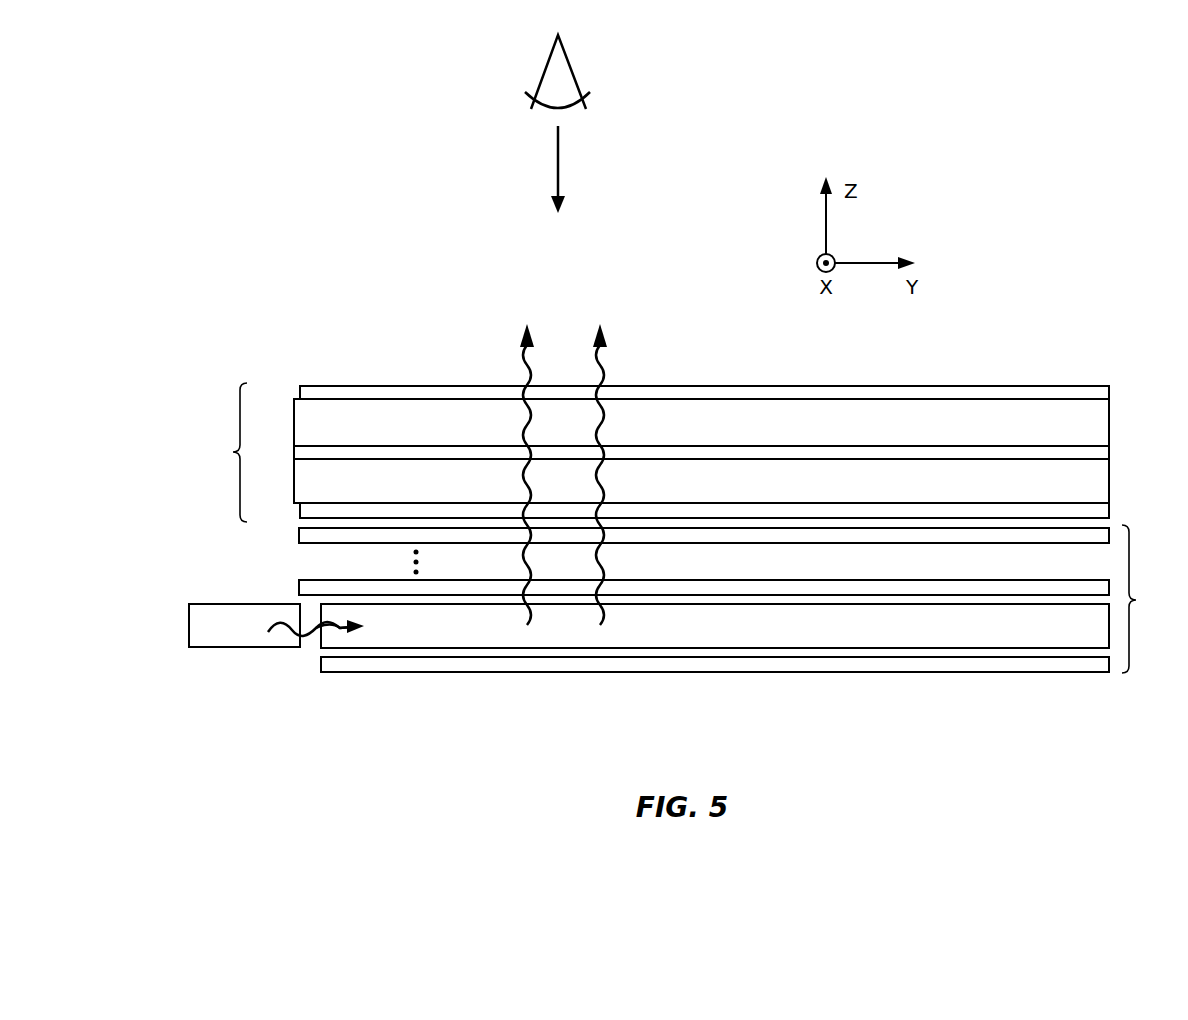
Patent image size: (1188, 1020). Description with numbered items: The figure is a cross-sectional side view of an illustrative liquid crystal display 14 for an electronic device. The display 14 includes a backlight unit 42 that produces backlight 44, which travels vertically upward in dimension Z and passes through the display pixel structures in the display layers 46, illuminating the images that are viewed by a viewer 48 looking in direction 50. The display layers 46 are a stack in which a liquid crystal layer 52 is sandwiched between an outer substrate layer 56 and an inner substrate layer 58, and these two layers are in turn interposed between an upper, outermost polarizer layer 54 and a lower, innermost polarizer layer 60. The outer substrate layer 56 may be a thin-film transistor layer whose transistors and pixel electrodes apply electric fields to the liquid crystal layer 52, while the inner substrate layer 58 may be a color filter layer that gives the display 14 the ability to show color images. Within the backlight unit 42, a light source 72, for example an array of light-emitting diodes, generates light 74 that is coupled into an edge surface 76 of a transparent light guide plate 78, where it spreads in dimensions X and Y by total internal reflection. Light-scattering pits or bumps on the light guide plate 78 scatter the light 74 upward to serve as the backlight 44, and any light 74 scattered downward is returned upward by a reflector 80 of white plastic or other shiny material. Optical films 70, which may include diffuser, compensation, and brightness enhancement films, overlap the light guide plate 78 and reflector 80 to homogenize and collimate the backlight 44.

The display 14 is at (1088, 172).
The backlight unit 42 is at (1142, 599).
The backlight 44 is at (592, 366).
The display layers 46 is at (226, 452).
The viewer 48 is at (572, 69).
The direction 50 is at (558, 174).
The liquid crystal layer 52 is at (372, 452).
The upper polarizer layer 54 is at (321, 393).
The outer substrate layer 56 is at (303, 422).
The inner substrate layer 58 is at (303, 473).
The lower polarizer layer 60 is at (302, 512).
The optical films 70 is at (308, 540).
The light source 72 is at (200, 626).
The light 74 is at (282, 623).
The edge surface 76 is at (318, 637).
The light guide plate 78 is at (410, 638).
The reflector 80 is at (497, 667).